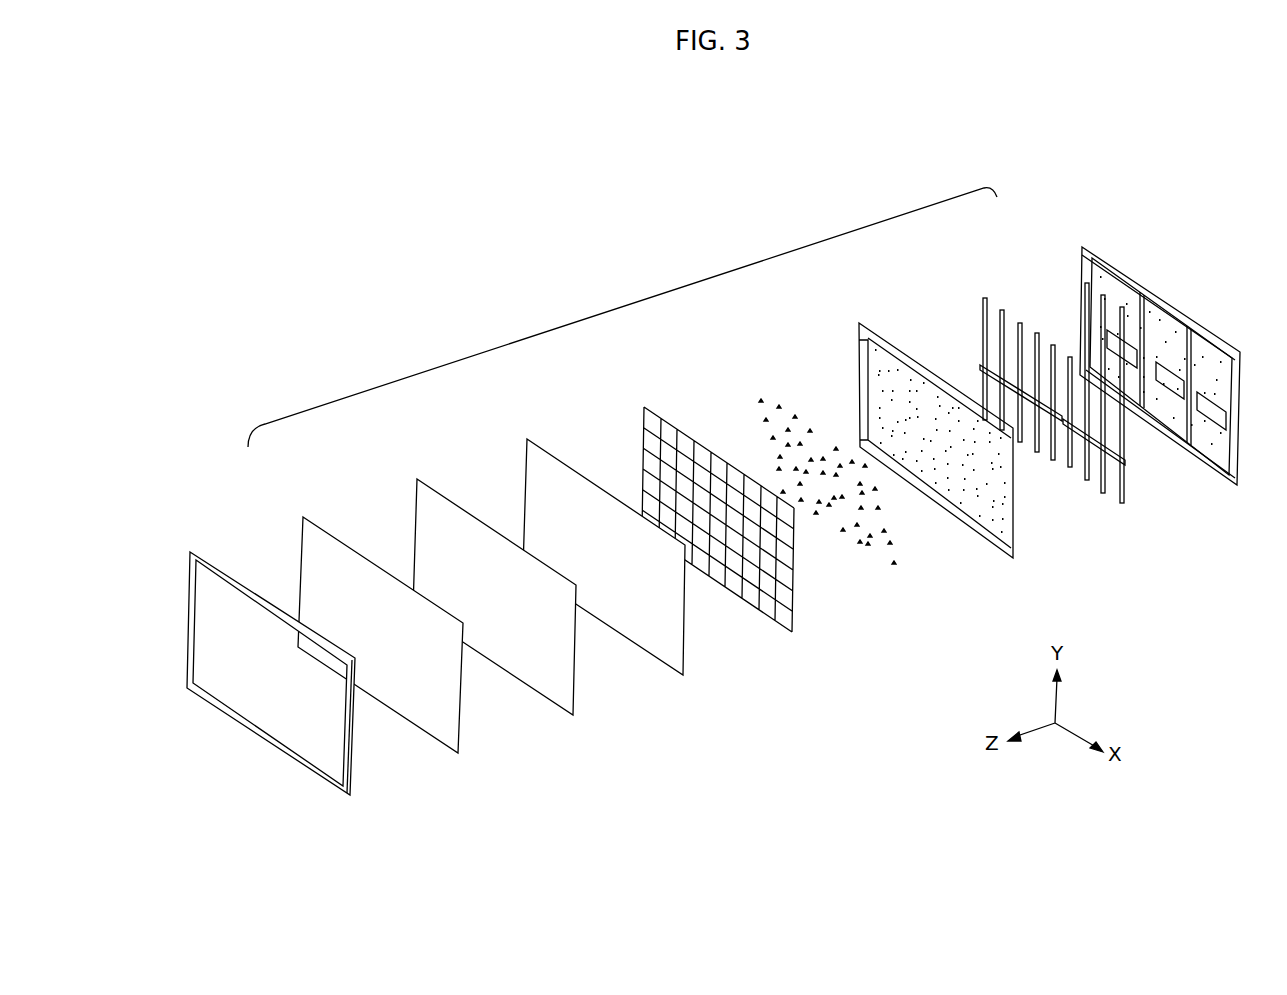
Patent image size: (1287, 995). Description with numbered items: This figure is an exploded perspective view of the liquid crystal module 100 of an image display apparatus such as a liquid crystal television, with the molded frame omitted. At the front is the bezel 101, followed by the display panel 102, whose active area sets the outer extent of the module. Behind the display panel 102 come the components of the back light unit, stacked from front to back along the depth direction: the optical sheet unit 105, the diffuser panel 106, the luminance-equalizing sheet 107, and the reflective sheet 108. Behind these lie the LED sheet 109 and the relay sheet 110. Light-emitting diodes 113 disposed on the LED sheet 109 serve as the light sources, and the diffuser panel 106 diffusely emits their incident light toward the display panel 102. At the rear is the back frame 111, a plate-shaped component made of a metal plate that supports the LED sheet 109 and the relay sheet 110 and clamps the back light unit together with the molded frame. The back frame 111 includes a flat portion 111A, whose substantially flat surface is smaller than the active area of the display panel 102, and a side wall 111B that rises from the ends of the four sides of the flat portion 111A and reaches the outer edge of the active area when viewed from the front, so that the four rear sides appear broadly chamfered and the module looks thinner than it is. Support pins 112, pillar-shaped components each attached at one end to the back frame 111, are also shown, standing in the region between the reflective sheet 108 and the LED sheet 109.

The liquid crystal module 100 is at (630, 303).
The bezel 101 is at (191, 550).
The display panel 102 is at (303, 516).
The optical sheet unit 105 is at (417, 478).
The diffuser panel 106 is at (527, 438).
The luminance-equalizing sheet 107 is at (643, 406).
The reflective sheet 108 is at (862, 322).
The LED sheet 109 is at (985, 298).
The relay sheet 110 is at (1088, 482).
The back frame 111 is at (1100, 337).
The flat portion 111A is at (1120, 312).
The side wall 111B is at (1104, 320).
The support pins 112 is at (768, 384).
The light-emitting diodes 113 is at (983, 377).